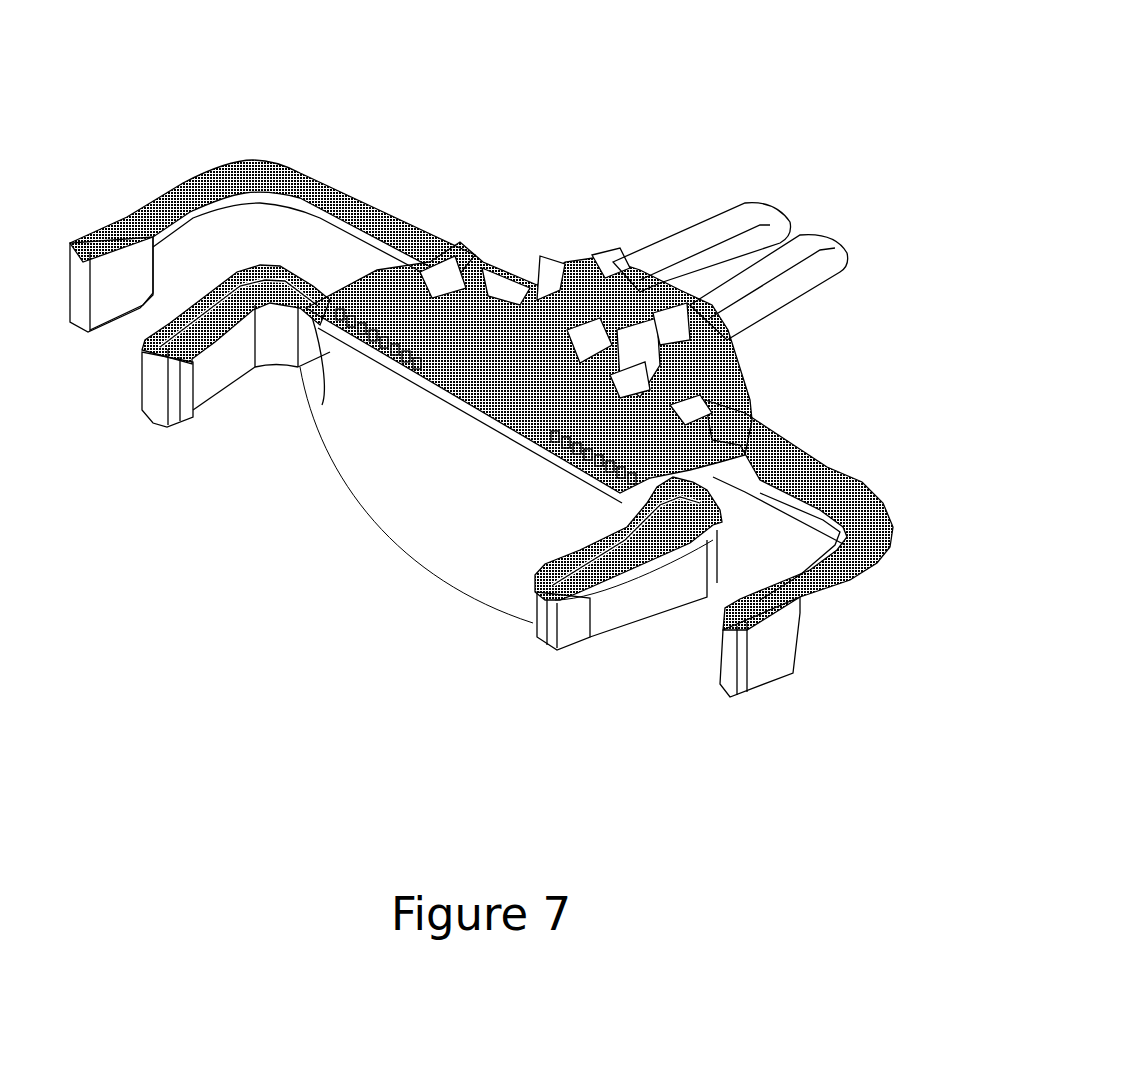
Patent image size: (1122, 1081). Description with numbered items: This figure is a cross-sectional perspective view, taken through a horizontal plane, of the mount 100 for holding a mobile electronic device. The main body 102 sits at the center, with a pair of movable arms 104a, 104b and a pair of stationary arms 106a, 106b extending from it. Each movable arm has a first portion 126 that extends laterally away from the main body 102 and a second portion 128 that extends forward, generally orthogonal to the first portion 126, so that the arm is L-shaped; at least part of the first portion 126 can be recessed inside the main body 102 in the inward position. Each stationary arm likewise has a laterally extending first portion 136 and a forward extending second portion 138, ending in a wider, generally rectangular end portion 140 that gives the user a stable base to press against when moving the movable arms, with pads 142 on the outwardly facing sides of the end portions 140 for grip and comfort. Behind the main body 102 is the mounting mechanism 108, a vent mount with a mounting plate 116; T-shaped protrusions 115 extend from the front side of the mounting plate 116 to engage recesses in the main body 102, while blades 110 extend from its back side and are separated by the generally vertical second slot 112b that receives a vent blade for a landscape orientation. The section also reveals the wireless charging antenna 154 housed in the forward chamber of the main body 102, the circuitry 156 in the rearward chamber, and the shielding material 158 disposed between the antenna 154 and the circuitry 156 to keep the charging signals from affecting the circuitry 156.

The mount 100 is at (918, 112).
The main body 102 is at (493, 583).
The movable arm 104a is at (612, 610).
The movable arm 104b is at (222, 380).
The stationary arm 106a is at (870, 550).
The stationary arm 106b is at (250, 168).
The mounting mechanism 108 is at (793, 257).
The blades 110 is at (673, 250).
The second slot 112b is at (720, 270).
The protrusion 115 is at (518, 310).
The mounting plate 116 is at (480, 255).
The first portion 126 is at (383, 297).
The second portion 128 is at (242, 358).
The first portion 136 is at (318, 187).
The second portion 138 is at (150, 207).
The end portion 140 is at (113, 313).
The pads 142 is at (83, 237).
The wireless charging antenna 154 is at (546, 450).
The circuitry 156 is at (478, 318).
The shielding material 158 is at (390, 295).